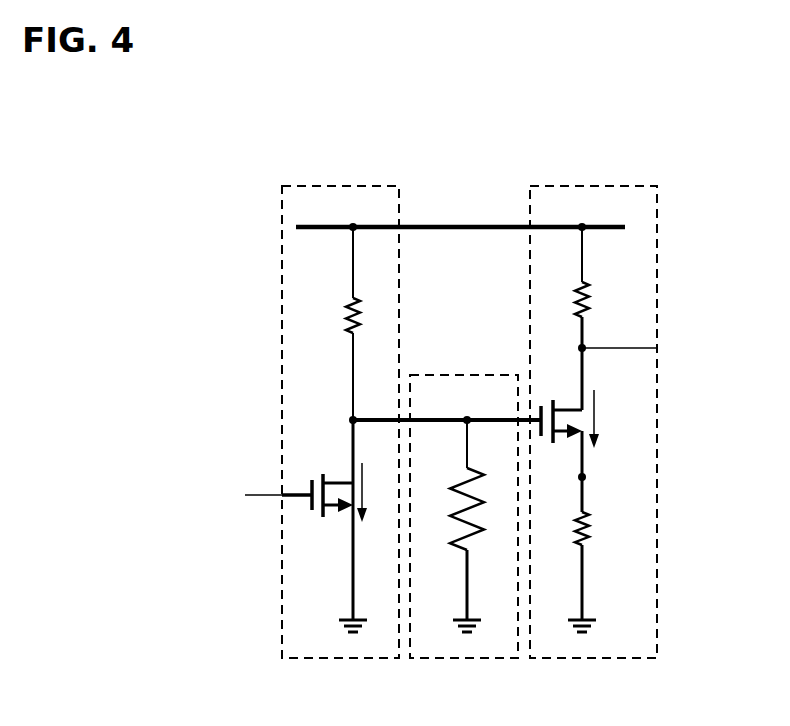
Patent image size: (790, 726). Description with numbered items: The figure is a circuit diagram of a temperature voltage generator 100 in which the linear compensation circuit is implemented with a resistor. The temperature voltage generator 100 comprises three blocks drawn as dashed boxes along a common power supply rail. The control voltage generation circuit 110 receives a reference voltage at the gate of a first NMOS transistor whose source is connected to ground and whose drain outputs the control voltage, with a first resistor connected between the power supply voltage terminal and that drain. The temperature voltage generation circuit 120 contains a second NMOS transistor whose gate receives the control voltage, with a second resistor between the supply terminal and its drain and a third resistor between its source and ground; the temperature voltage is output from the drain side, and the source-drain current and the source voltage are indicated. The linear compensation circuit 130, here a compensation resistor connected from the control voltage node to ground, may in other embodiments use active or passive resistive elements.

The temperature voltage generator 100 is at (108, 181).
The control voltage generation circuit 110 is at (349, 186).
The temperature voltage generation circuit 120 is at (577, 186).
The linear compensation circuit 130 is at (465, 658).